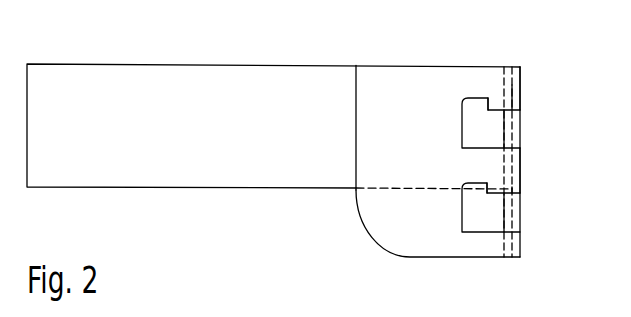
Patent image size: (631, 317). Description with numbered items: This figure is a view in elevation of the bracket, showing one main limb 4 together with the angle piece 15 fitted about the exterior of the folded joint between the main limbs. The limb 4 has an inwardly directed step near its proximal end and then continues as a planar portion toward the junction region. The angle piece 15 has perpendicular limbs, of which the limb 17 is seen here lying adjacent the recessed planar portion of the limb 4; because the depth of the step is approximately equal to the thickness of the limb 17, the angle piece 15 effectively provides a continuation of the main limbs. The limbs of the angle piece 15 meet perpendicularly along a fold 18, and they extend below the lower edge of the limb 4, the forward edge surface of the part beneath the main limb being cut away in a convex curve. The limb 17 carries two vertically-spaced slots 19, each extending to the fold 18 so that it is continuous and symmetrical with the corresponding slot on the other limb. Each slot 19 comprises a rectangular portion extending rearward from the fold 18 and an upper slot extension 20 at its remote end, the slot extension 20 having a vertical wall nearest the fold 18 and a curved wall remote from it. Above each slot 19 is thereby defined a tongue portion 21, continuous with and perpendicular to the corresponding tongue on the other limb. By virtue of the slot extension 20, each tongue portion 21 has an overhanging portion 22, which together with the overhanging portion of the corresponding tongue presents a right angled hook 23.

The limb 4 is at (193, 177).
The angle piece 15 is at (393, 251).
The limb 17 is at (384, 82).
The fold 18 is at (524, 70).
The slot 19 is at (512, 121).
The slot extension 20 is at (470, 102).
The tongue portion 21 is at (483, 82).
The overhanging portion 22 is at (512, 85).
The right angled hook 23 is at (527, 156).